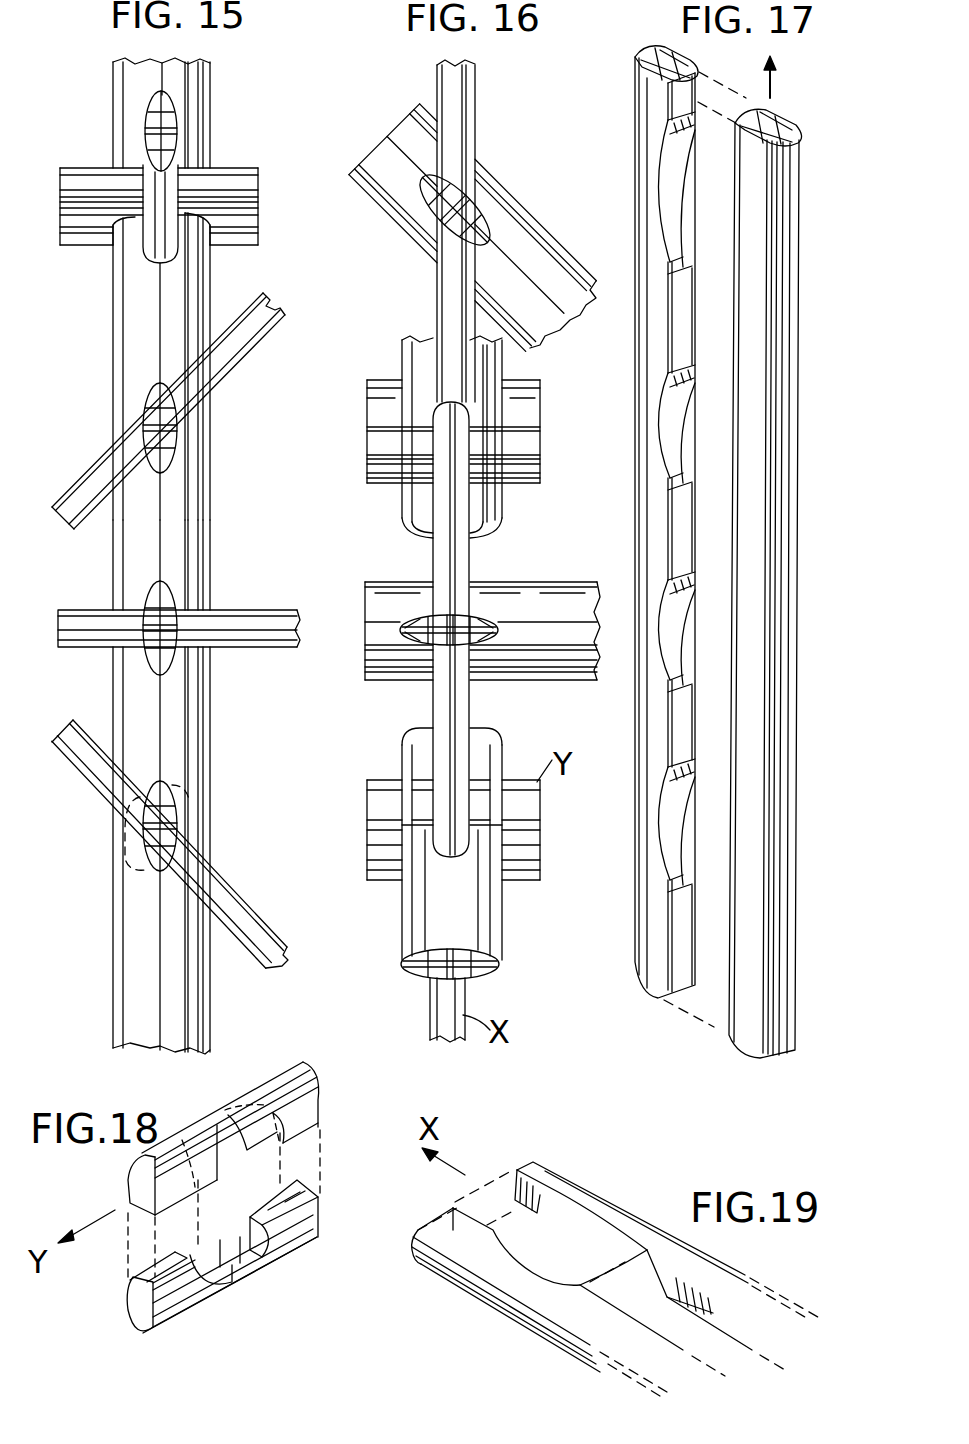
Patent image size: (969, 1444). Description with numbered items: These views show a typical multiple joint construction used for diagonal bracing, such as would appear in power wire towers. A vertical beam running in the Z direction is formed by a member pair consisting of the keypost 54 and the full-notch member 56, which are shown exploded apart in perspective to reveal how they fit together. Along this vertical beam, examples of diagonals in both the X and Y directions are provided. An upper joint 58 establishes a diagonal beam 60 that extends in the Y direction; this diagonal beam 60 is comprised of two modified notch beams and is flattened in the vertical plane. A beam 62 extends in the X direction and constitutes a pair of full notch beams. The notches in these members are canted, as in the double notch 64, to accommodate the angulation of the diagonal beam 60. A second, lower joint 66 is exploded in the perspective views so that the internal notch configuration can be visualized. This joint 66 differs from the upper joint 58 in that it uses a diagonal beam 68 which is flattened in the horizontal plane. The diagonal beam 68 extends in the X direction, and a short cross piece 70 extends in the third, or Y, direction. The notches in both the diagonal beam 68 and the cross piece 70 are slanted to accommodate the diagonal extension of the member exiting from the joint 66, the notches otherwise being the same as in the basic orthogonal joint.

In FIG. 16, the keypost 54 is at (460, 107).
In FIG. 17, the keypost 54 is at (787, 223).
In FIG. 17, the full-notch member 56 is at (640, 505).
In FIG. 15, the joint 58 is at (104, 146).
In FIG. 15, the diagonal beam 60 is at (165, 185).
In FIG. 16, the diagonal beam 60 is at (515, 235).
In FIG. 15, the beam 62 is at (258, 203).
In FIG. 16, the beam 62 is at (417, 213).
In FIG. 17, the double notch 64 is at (672, 227).
In FIG. 15, the joint 66 is at (103, 836).
In FIG. 15, the diagonal beam 68 is at (80, 720).
In FIG. 16, the diagonal beam 68 is at (415, 915).
In FIG. 19, the diagonal beam 68 is at (578, 1175).
In FIG. 15, the cross piece 70 is at (170, 830).
In FIG. 16, the cross piece 70 is at (525, 855).
In FIG. 18, the cross piece 70 is at (305, 1105).